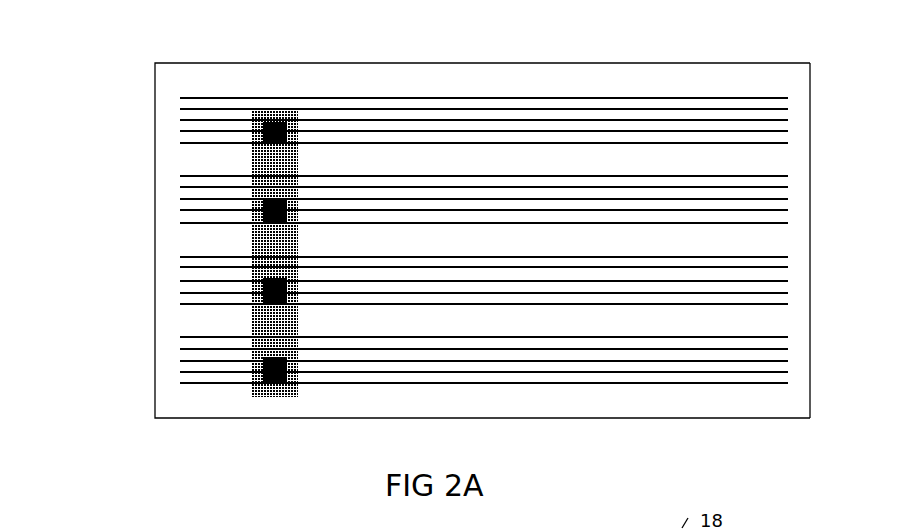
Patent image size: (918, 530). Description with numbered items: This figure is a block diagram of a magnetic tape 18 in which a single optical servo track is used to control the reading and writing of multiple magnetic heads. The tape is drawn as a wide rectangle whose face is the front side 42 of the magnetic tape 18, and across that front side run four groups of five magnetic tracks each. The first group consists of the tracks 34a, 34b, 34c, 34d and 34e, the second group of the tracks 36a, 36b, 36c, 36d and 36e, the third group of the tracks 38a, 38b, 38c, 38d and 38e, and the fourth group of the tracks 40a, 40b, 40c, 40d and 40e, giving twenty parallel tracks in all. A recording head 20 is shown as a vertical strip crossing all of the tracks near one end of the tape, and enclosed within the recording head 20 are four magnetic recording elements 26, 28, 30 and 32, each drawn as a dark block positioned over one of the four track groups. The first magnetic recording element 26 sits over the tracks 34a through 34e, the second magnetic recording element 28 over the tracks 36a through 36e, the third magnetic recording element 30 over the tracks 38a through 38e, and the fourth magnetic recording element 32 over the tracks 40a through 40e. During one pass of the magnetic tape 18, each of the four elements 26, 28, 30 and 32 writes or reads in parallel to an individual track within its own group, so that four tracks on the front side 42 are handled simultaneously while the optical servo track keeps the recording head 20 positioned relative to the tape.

The magnetic tape 18 is at (633, 63).
The recording head 20 is at (268, 115).
The magnetic recording element 26 is at (278, 112).
The magnetic recording element 28 is at (298, 186).
The magnetic recording element 30 is at (298, 264).
The magnetic recording element 32 is at (303, 341).
The magnetic track 34a is at (170, 98).
The magnetic track 34b is at (170, 109).
The magnetic track 34c is at (170, 120).
The magnetic track 34d is at (170, 131).
The magnetic track 34e is at (170, 143).
The magnetic track 36a is at (170, 176).
The magnetic track 36b is at (170, 187).
The magnetic track 36c is at (170, 199).
The magnetic track 36d is at (170, 211).
The magnetic track 36e is at (170, 223).
The magnetic track 38a is at (170, 257).
The magnetic track 38b is at (170, 268).
The magnetic track 38c is at (170, 281).
The magnetic track 38d is at (170, 293).
The magnetic track 38e is at (170, 304).
The magnetic track 40a is at (170, 337).
The magnetic track 40b is at (170, 349).
The magnetic track 40c is at (170, 361).
The magnetic track 40d is at (170, 372).
The magnetic track 40e is at (170, 383).
The front side 42 is at (798, 157).